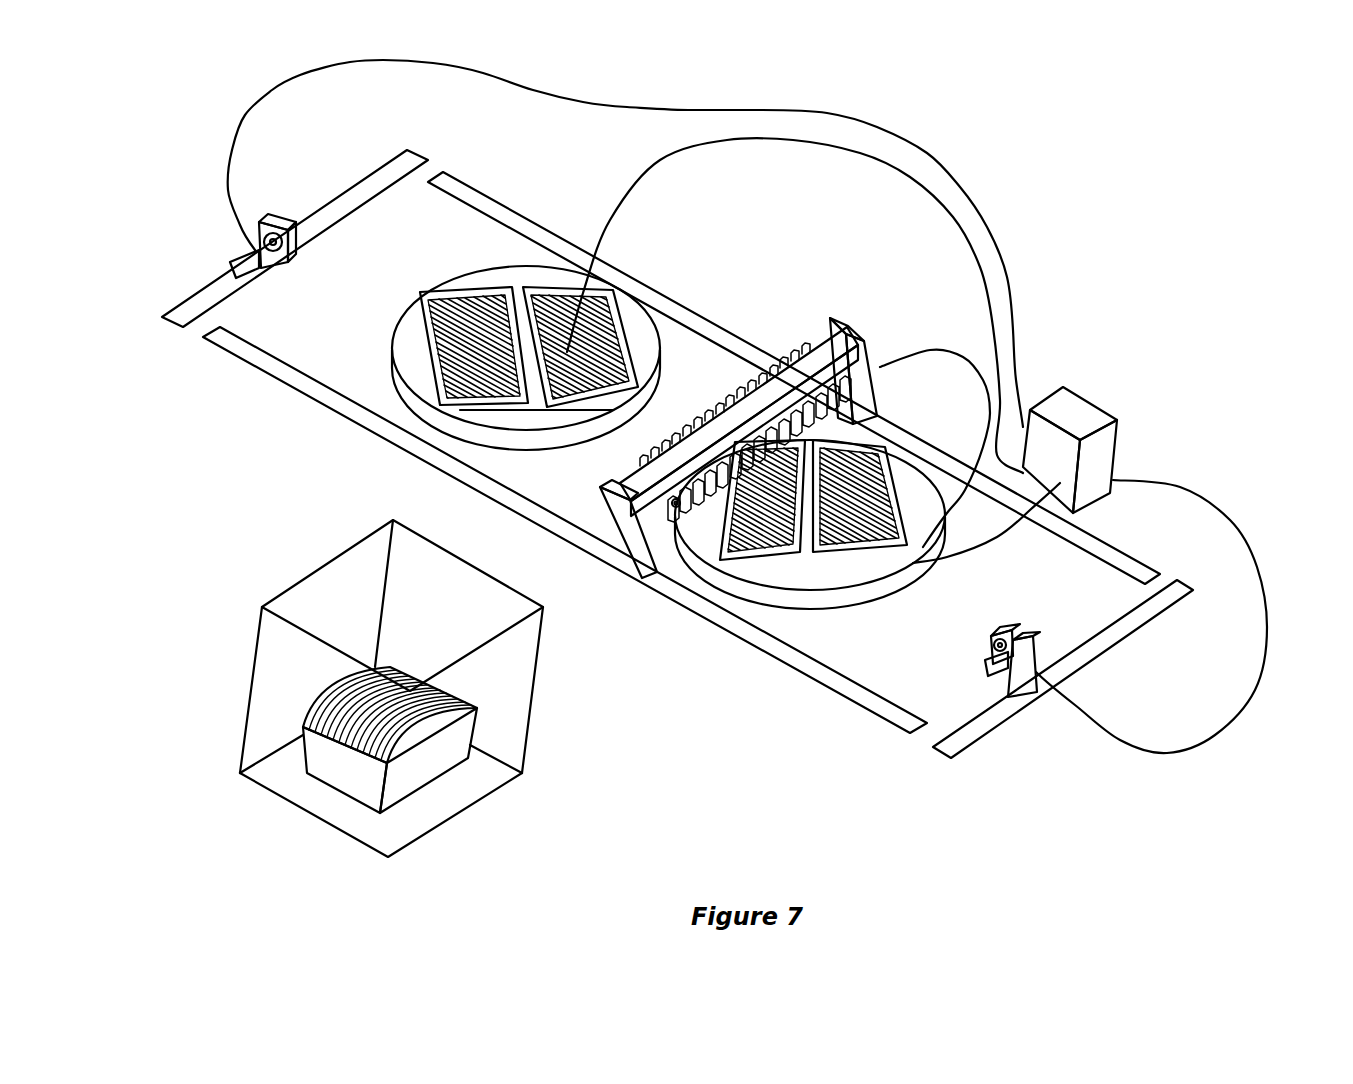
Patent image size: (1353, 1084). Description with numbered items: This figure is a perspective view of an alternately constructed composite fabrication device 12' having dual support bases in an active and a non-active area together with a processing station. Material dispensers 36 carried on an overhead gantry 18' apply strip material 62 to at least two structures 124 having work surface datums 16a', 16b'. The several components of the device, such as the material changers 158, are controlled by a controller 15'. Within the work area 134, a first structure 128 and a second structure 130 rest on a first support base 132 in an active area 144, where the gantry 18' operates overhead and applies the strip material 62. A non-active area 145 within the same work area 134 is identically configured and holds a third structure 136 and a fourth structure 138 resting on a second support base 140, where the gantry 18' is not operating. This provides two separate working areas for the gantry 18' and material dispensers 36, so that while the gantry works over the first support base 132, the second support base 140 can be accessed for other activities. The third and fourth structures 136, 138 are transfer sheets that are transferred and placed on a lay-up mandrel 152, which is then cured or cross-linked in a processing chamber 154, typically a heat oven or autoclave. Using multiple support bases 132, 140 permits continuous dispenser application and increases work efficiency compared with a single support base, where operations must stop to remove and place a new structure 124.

The composite fabrication device 12' is at (760, 387).
The controller 15' is at (1081, 412).
The work surface datum 16a' is at (900, 476).
The work surface datum 16b' is at (616, 314).
The overhead gantry 18' is at (891, 346).
The material dispenser 36 is at (765, 365).
The strip material 62 is at (603, 300).
The structure 124 is at (627, 393).
The first structure 128 is at (903, 547).
The second structure 130 is at (802, 557).
The first support base 132 is at (853, 597).
The work area 134 is at (350, 382).
The third structure 136 is at (460, 388).
The fourth structure 138 is at (547, 397).
The second support base 140 is at (512, 270).
The active area 144 is at (937, 667).
The non-active area 145 is at (357, 330).
The lay-up mandrel 152 is at (430, 770).
The processing chamber 154 is at (333, 632).
The material changer 158 is at (263, 214).